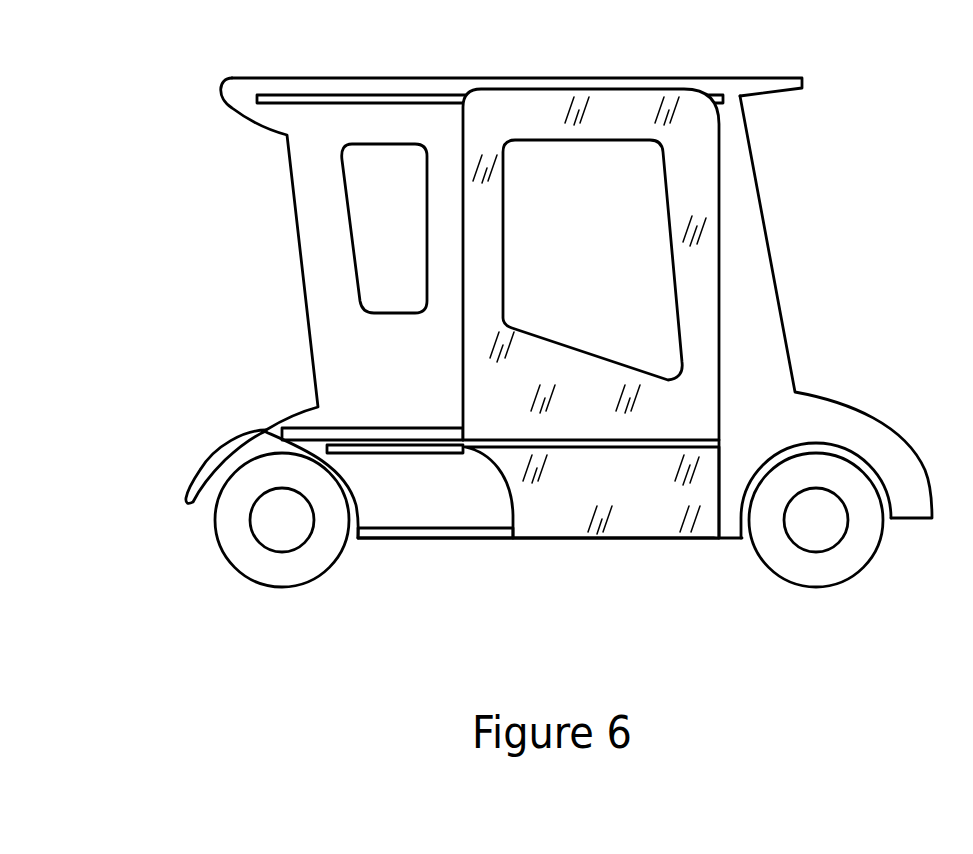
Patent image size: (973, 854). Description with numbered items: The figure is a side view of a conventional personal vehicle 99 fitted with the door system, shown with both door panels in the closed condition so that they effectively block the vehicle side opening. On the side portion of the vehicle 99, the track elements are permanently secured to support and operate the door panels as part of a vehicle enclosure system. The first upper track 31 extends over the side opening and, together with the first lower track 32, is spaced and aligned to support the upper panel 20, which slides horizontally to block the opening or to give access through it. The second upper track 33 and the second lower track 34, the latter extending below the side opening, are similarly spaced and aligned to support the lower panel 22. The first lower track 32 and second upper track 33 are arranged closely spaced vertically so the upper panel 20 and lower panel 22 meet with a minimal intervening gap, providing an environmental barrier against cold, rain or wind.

The upper panel 20 is at (722, 197).
The lower panel 22 is at (588, 540).
The first upper track 31 is at (312, 96).
The first lower track 32 is at (417, 427).
The second upper track 33 is at (400, 455).
The second lower track 34 is at (445, 538).
The personal vehicle 99 is at (780, 297).